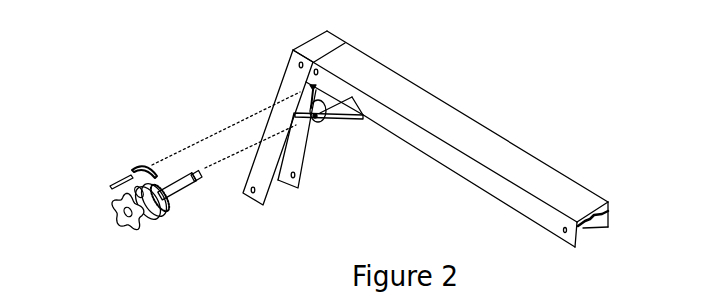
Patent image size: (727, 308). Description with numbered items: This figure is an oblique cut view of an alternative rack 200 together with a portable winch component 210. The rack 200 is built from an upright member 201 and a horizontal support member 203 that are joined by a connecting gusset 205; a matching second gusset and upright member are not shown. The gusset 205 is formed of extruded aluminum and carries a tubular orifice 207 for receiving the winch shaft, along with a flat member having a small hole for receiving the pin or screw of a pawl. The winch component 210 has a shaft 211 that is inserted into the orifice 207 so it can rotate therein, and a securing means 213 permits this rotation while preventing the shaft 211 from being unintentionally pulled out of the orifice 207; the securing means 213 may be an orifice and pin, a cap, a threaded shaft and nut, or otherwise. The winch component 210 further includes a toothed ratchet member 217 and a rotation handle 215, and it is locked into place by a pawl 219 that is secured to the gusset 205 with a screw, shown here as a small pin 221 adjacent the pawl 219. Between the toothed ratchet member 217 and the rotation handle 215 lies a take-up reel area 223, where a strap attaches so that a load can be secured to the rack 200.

The rack 200 is at (448, 86).
The upright member 201 is at (292, 78).
The horizontal support member 203 is at (485, 137).
The connecting gusset 205 is at (340, 122).
The tubular orifice 207 is at (321, 124).
The winch component 210 is at (188, 212).
The shaft 211 is at (195, 185).
The securing means 213 is at (192, 173).
The rotation handle 215 is at (128, 222).
The toothed ratchet member 217 is at (152, 213).
The pawl 219 is at (141, 166).
The pin 221 is at (118, 172).
The take-up reel area 223 is at (133, 188).